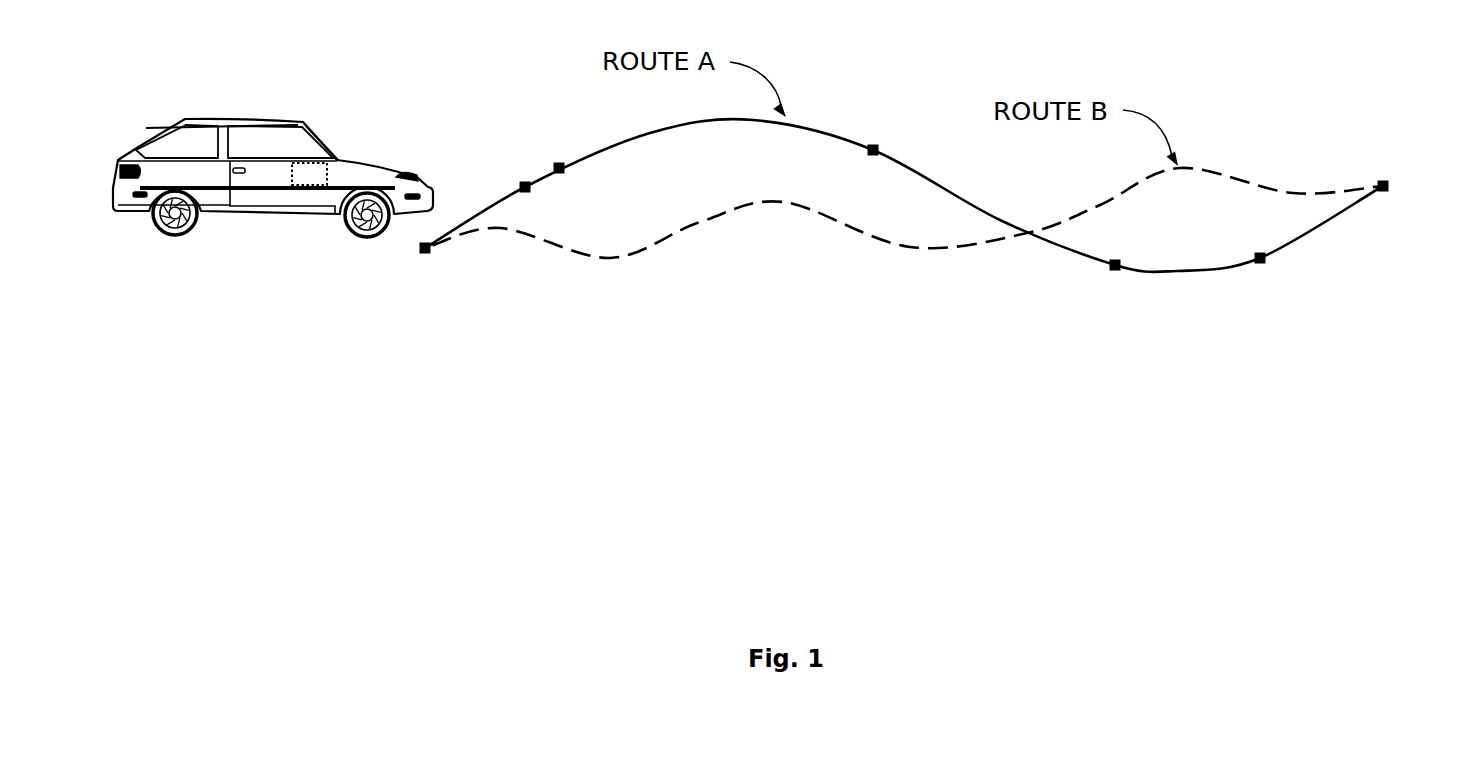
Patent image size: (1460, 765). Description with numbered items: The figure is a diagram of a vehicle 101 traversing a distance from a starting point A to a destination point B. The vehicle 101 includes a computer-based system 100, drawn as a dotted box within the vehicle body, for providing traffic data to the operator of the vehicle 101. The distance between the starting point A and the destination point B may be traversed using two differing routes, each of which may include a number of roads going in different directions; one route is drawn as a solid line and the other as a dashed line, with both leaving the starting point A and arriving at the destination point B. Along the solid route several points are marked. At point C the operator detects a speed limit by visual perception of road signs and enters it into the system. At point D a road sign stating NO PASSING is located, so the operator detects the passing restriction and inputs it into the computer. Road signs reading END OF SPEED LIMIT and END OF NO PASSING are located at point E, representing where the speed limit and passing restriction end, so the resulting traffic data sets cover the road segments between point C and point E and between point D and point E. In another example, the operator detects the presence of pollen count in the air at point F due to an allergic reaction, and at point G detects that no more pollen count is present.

The computer-based system 100 is at (310, 162).
The vehicle 101 is at (222, 118).
The starting point A is at (426, 278).
The destination point B is at (1407, 207).
The point C is at (512, 171).
The point D is at (568, 149).
The point E is at (870, 125).
The point F is at (1102, 284).
The point G is at (1269, 279).